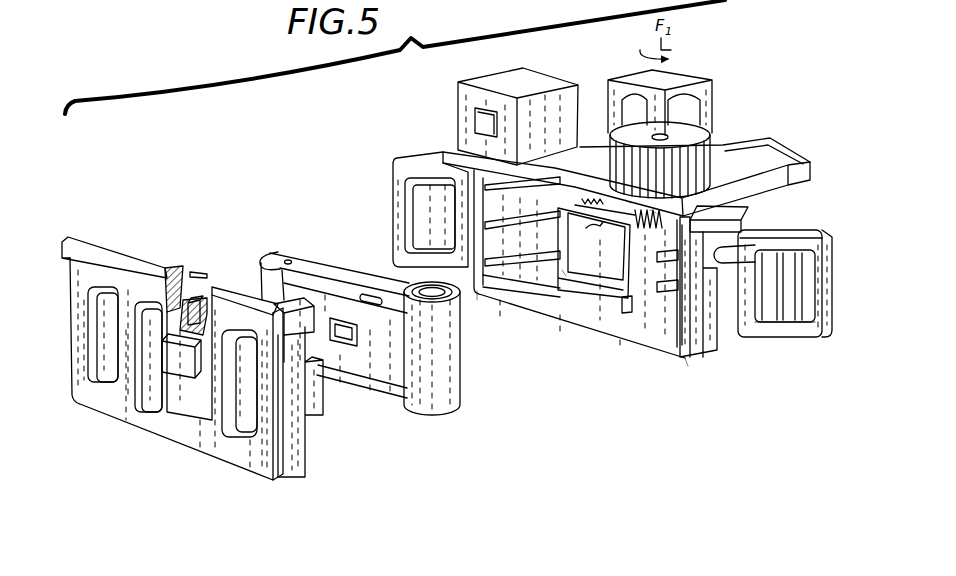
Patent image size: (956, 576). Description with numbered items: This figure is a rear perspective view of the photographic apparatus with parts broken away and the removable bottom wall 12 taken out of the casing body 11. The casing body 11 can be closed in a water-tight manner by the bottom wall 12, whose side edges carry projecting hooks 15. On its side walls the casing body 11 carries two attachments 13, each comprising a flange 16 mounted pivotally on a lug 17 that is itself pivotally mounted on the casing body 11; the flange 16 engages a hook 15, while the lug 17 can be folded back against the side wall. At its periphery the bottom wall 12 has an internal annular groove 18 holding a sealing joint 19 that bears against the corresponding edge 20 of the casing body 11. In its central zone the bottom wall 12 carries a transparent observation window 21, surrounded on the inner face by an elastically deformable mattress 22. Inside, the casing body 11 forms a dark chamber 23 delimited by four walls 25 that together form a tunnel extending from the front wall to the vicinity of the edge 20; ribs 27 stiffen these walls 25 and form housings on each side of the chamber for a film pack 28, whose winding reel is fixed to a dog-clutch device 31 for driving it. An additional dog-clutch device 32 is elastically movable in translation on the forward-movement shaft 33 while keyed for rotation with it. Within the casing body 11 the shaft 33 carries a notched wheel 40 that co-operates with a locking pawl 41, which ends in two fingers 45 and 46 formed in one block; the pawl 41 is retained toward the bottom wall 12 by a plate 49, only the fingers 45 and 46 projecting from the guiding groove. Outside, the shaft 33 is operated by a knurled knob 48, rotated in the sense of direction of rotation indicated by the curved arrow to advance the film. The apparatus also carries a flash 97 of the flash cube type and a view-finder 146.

The casing body 11 is at (712, 362).
The bottom wall 12 is at (221, 463).
The attachment 13 is at (409, 153).
The hook 15 is at (318, 408).
The flange 16 is at (787, 337).
The lug 17 is at (762, 320).
The annular groove 18 is at (185, 266).
The sealing joint 19 is at (202, 271).
The edge 20 is at (568, 320).
The transparent observation window 21 is at (187, 367).
The elastically deformable mattress 22 is at (203, 300).
The dark chamber 23 is at (565, 274).
The walls 25 is at (574, 208).
The ribs 27 is at (486, 223).
The pack 28 is at (345, 270).
The dog-clutch device 31 is at (447, 298).
The additional dog-clutch device 32 is at (668, 232).
The forward-movement shaft 33 is at (663, 136).
The notched wheel 40 is at (668, 219).
The locking pawl 41 is at (602, 230).
The finger 45 is at (652, 213).
The finger 46 is at (587, 228).
The knurled knob 48 is at (703, 143).
The plate 49 is at (626, 203).
The flash 97 is at (694, 72).
The view-finder 146 is at (547, 79).